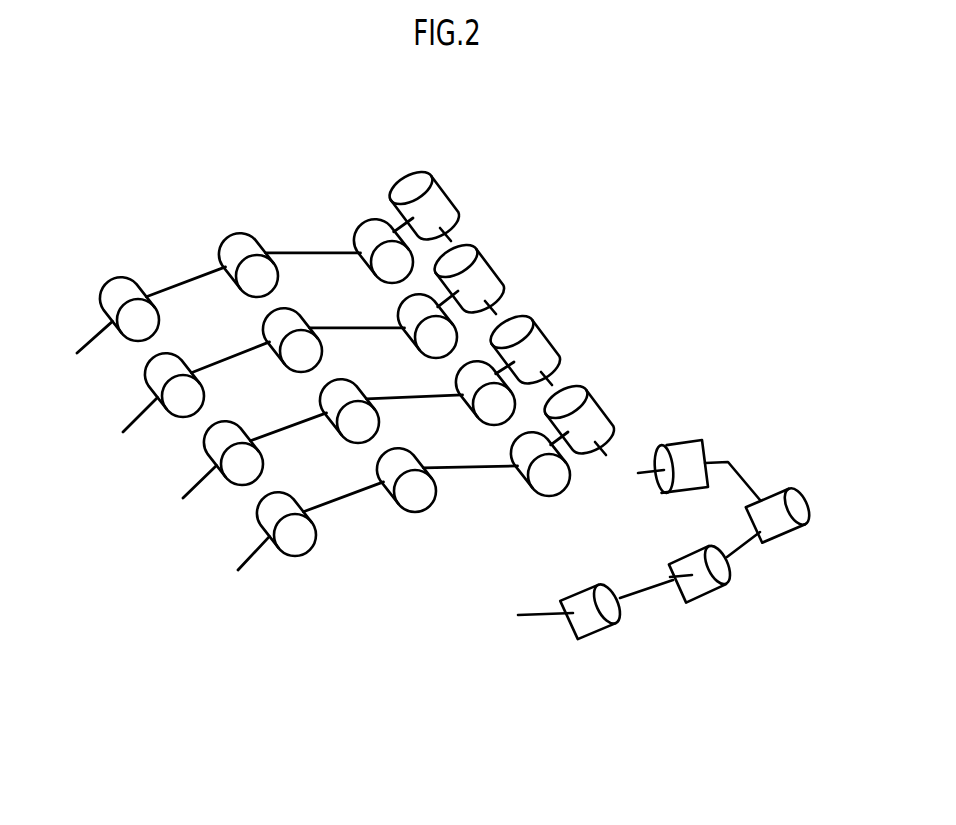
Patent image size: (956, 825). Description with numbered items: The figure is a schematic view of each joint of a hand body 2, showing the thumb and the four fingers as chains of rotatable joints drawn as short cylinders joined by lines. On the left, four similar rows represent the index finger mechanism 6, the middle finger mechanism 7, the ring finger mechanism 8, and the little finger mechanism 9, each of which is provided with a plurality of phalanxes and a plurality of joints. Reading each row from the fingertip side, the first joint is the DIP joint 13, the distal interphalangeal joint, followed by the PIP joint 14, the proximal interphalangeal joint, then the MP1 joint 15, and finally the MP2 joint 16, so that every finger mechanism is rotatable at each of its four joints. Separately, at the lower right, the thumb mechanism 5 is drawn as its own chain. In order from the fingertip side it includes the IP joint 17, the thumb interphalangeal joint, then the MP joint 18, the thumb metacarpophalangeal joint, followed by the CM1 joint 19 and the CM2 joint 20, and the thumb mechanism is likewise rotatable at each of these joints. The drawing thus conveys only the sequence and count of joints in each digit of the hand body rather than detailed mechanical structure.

The hand body 2 is at (398, 686).
The thumb mechanism 5 is at (558, 671).
The index finger mechanism 6 is at (226, 585).
The middle finger mechanism 7 is at (172, 514).
The ring finger mechanism 8 is at (111, 447).
The little finger mechanism 9 is at (60, 364).
The DIP joint 13 is at (118, 275).
The PIP joint 14 is at (240, 231).
The MP1 joint 15 is at (366, 218).
The MP2 joint 16 is at (417, 174).
The IP joint 17 is at (612, 613).
The MP joint 18 is at (721, 576).
The CM1 joint 19 is at (803, 510).
The CM2 joint 20 is at (687, 450).